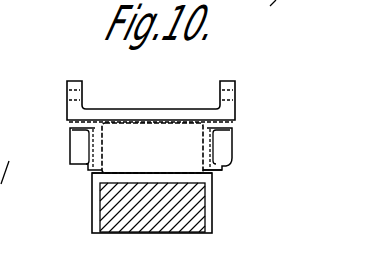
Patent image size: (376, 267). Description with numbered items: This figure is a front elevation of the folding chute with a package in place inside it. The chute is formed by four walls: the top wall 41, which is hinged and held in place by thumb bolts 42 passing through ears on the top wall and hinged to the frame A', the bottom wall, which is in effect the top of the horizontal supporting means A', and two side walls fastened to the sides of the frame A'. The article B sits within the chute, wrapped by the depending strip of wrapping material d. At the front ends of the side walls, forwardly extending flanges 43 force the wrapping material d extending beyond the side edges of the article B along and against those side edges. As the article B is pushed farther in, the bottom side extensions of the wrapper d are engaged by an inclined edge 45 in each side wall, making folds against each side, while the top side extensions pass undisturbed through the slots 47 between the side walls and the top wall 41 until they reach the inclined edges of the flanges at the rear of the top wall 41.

The top wall 41 is at (200, 78).
The slots 47 is at (94, 122).
The flanges 43 is at (78, 141).
The inclined edge 45 is at (212, 172).
The wrapping material d is at (17, 222).
The article B is at (205, 148).
The horizontal supporting means A' is at (152, 220).
The thumb bolts 42 is at (26, 256).